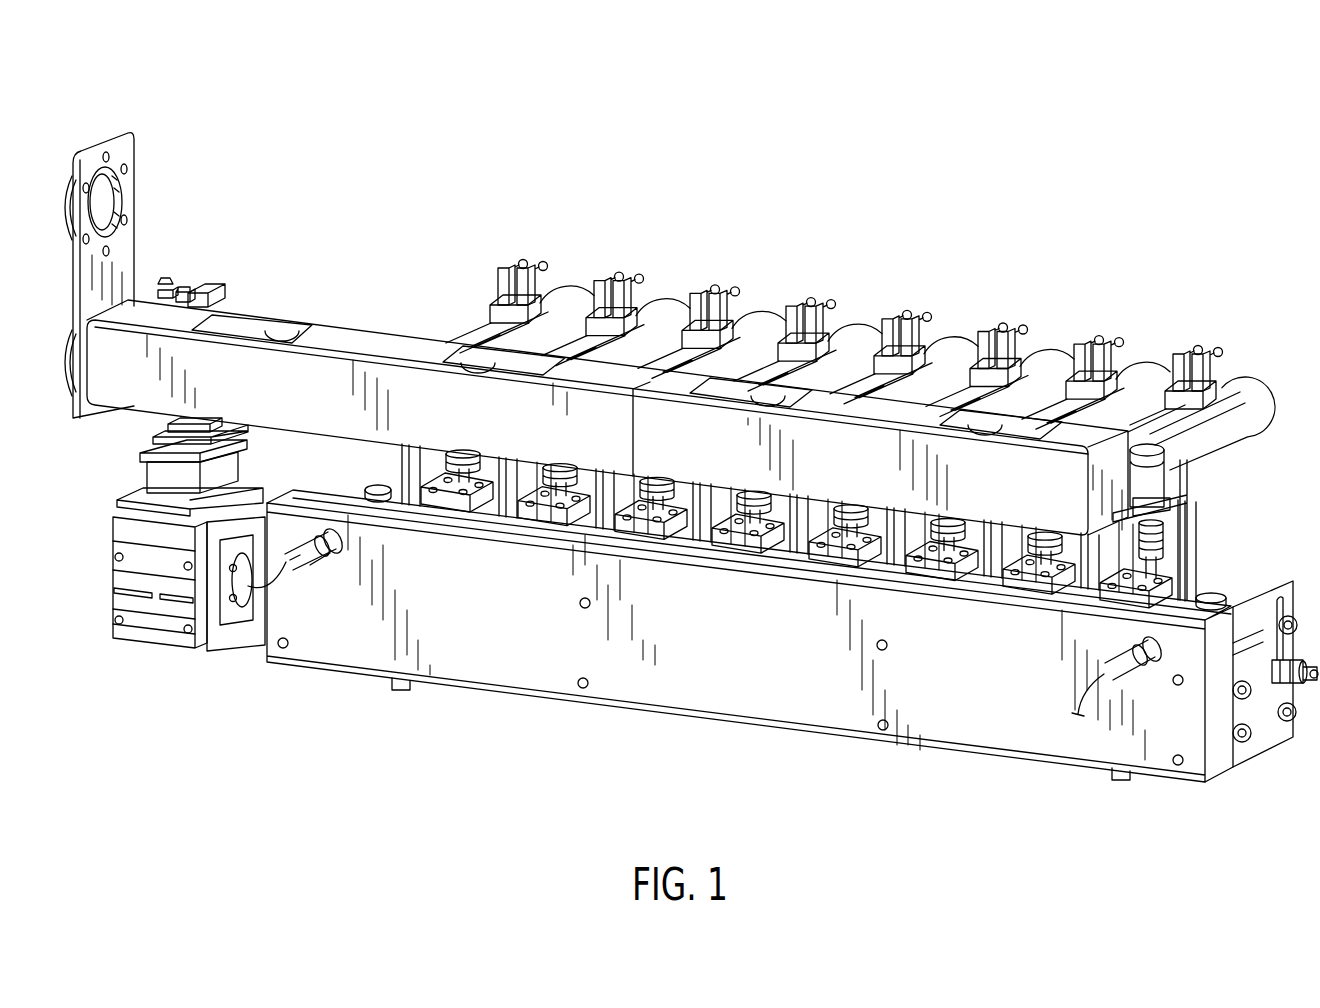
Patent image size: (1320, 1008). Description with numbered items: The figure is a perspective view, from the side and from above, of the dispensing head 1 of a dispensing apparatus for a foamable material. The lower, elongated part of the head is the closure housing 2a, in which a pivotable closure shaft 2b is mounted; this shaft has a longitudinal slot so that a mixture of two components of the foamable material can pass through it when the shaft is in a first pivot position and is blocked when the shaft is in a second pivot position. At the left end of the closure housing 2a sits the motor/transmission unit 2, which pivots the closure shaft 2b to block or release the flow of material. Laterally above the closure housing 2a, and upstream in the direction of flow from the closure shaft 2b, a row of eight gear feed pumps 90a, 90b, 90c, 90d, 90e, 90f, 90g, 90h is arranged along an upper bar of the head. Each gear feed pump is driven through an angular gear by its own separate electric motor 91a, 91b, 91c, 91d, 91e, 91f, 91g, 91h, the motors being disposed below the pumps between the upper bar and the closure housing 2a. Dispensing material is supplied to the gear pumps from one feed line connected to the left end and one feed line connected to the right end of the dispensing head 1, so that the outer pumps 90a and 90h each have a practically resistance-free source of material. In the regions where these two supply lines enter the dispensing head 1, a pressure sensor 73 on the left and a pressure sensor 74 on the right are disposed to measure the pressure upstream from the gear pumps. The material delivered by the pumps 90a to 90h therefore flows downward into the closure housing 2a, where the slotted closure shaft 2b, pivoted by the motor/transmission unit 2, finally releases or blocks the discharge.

The dispensing head 1 is at (188, 77).
The motor/transmission unit 2 is at (152, 608).
The closure housing 2a is at (802, 708).
The closure shaft 2b is at (228, 606).
The pressure sensor 73 is at (372, 488).
The pressure sensor 74 is at (1265, 603).
The gear feed pump 90a is at (565, 282).
The gear feed pump 90b is at (660, 295).
The gear feed pump 90c is at (756, 307).
The gear feed pump 90d is at (851, 320).
The gear feed pump 90e is at (947, 332).
The gear feed pump 90f is at (1042, 345).
The gear feed pump 90g is at (1138, 357).
The gear feed pump 90h is at (1240, 375).
The electric motor 91a is at (440, 450).
The electric motor 91b is at (601, 465).
The electric motor 91c is at (693, 478).
The electric motor 91d is at (792, 492).
The electric motor 91e is at (838, 505).
The electric motor 91f is at (984, 508).
The electric motor 91g is at (1030, 532).
The electric motor 91h is at (1165, 548).